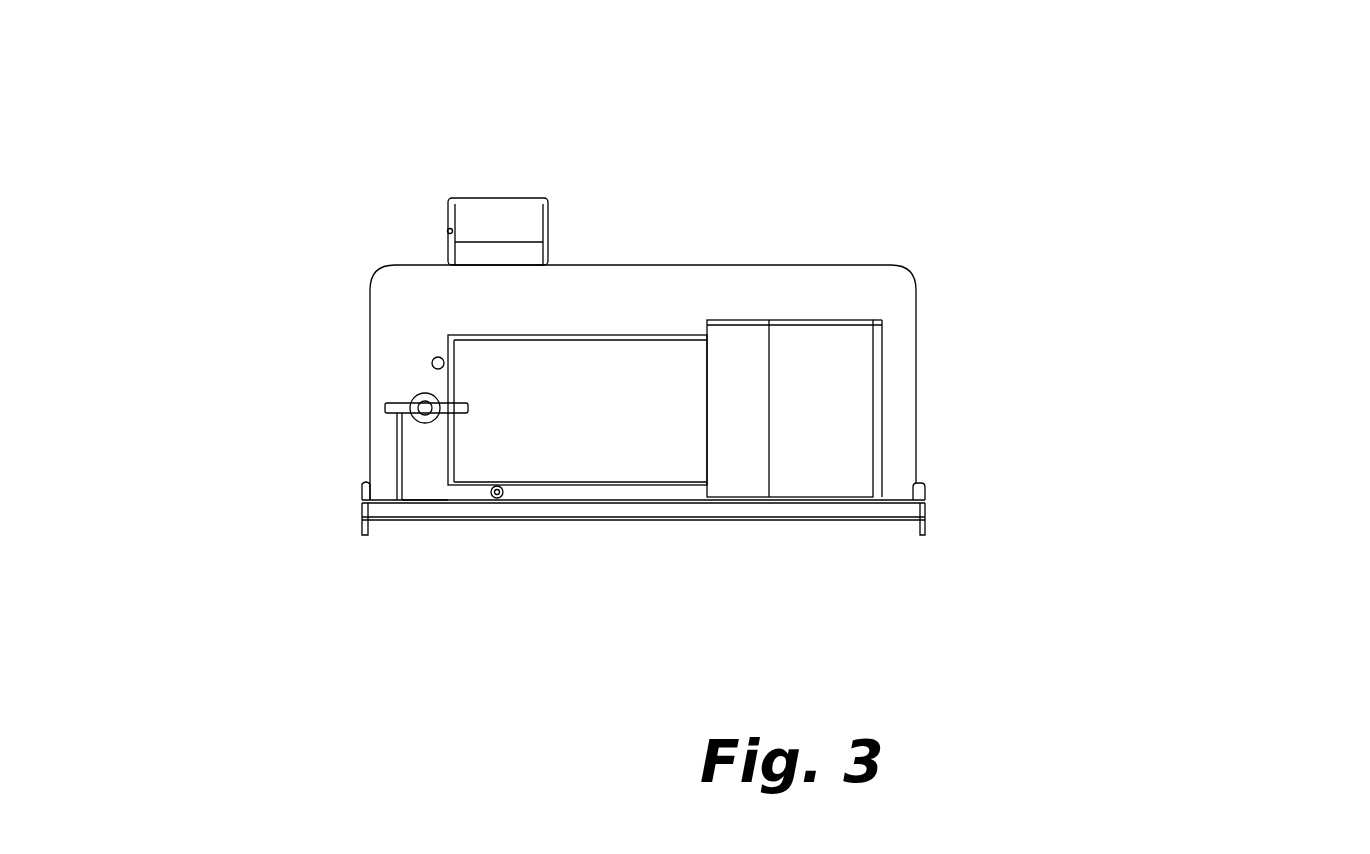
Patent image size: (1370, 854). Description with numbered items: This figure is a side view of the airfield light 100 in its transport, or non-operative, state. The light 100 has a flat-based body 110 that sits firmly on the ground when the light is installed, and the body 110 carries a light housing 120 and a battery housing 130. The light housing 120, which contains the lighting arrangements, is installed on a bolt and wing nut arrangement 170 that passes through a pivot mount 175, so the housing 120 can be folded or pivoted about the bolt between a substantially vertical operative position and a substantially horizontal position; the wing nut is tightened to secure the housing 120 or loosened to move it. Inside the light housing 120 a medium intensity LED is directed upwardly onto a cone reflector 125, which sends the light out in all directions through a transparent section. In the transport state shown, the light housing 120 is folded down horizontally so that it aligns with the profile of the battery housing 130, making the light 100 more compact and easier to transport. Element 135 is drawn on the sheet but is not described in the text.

The airfield light 100 is at (1066, 273).
The flat-based body 110 is at (883, 517).
The light housing 120 is at (655, 435).
The cone reflector 125 is at (867, 453).
The battery housing 130 is at (608, 280).
The top attachment module 135 is at (497, 212).
The bolt and wing nut arrangement 170 is at (410, 405).
The pivot mount 175 is at (420, 473).